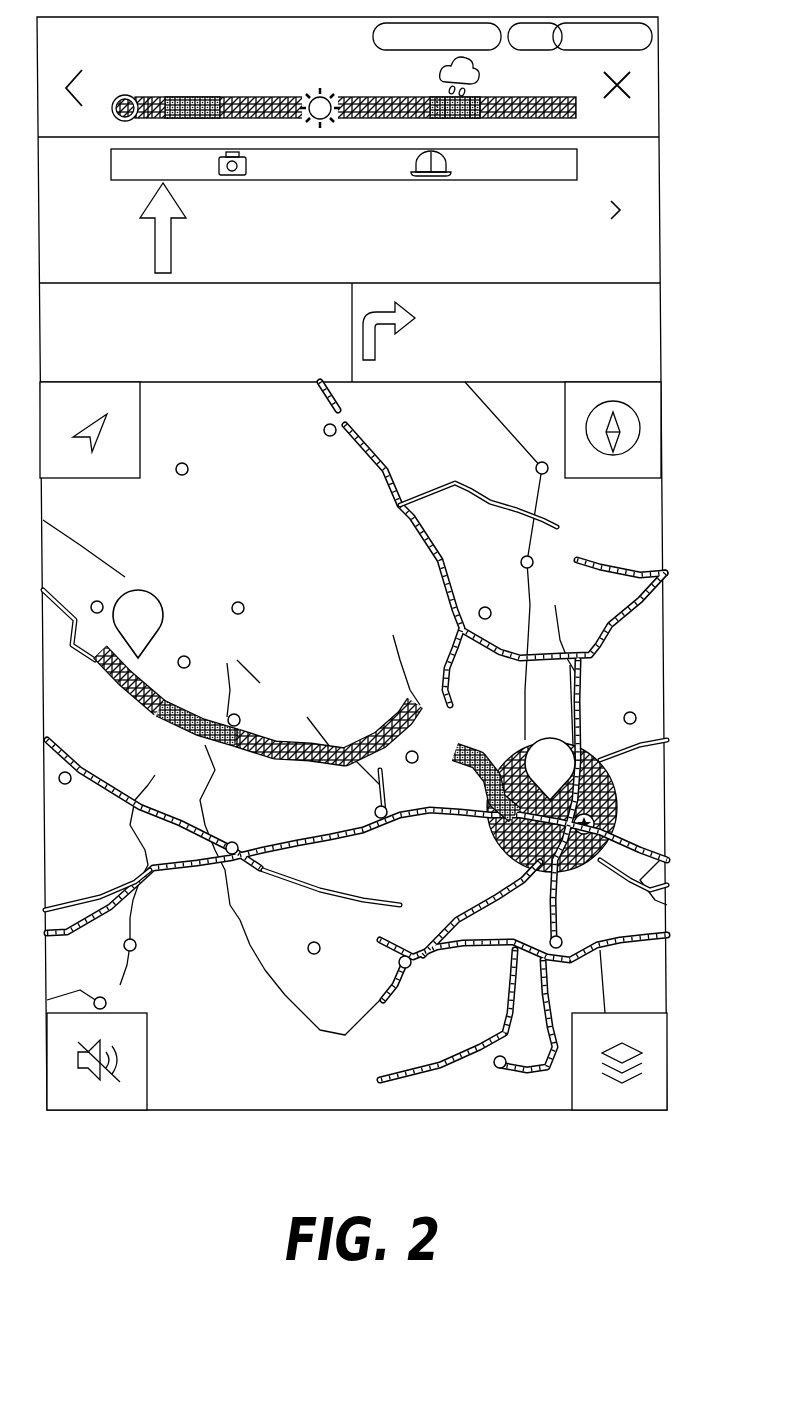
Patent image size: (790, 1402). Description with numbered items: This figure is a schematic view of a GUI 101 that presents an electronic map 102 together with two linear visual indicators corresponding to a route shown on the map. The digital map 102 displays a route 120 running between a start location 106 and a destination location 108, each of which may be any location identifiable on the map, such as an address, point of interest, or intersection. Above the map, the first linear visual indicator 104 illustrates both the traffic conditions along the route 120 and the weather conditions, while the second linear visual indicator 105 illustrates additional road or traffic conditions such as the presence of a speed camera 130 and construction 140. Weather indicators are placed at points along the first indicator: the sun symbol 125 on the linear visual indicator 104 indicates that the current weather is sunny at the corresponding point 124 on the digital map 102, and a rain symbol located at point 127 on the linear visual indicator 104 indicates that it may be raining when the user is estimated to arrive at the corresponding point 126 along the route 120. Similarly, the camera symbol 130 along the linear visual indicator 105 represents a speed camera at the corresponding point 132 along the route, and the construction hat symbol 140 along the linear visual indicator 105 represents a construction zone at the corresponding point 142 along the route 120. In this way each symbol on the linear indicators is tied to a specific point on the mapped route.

The GUI 101 is at (662, 297).
The electronic map 102 is at (643, 504).
The linear visual indicator 104 is at (576, 107).
The linear visual indicator 105 is at (577, 155).
The start location 106 is at (596, 822).
The destination location 108 is at (178, 612).
The route 120 is at (305, 765).
The corresponding point 124 is at (360, 745).
The sun symbol 125 is at (316, 92).
The corresponding point 126 is at (200, 742).
The point on linear visual indicator 127 is at (462, 118).
The camera symbol 130 is at (238, 176).
The corresponding point 132 is at (453, 742).
The construction hat symbol 140 is at (440, 176).
The corresponding point 142 is at (243, 742).